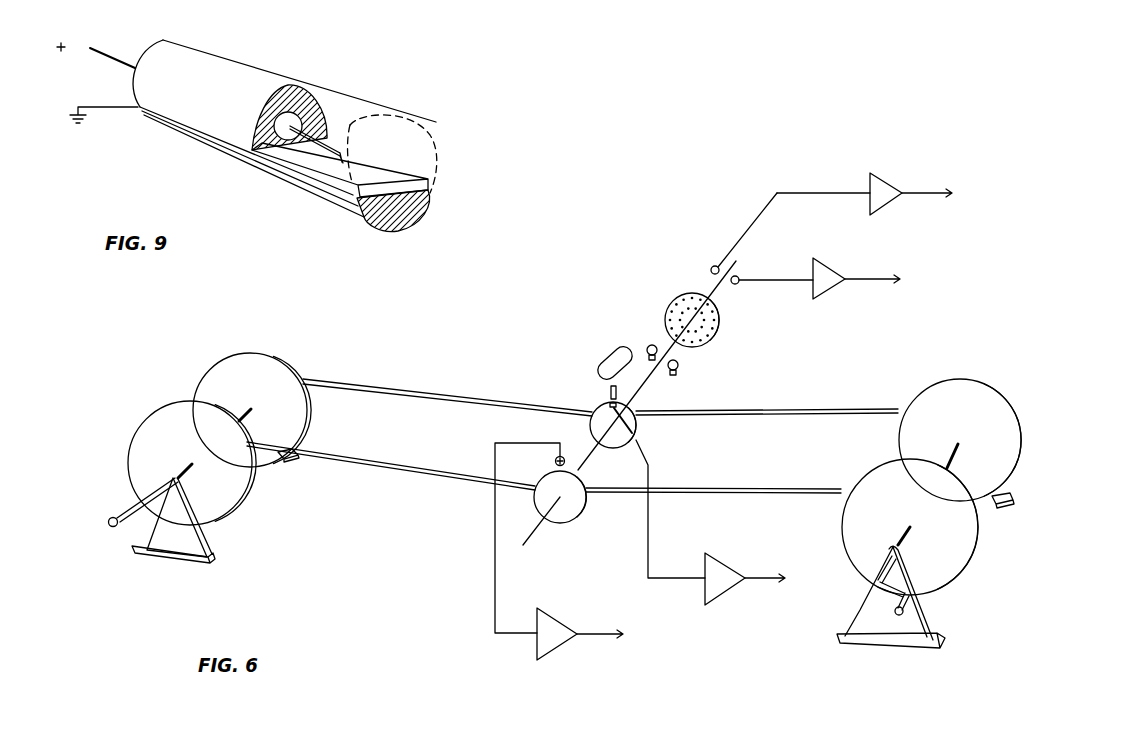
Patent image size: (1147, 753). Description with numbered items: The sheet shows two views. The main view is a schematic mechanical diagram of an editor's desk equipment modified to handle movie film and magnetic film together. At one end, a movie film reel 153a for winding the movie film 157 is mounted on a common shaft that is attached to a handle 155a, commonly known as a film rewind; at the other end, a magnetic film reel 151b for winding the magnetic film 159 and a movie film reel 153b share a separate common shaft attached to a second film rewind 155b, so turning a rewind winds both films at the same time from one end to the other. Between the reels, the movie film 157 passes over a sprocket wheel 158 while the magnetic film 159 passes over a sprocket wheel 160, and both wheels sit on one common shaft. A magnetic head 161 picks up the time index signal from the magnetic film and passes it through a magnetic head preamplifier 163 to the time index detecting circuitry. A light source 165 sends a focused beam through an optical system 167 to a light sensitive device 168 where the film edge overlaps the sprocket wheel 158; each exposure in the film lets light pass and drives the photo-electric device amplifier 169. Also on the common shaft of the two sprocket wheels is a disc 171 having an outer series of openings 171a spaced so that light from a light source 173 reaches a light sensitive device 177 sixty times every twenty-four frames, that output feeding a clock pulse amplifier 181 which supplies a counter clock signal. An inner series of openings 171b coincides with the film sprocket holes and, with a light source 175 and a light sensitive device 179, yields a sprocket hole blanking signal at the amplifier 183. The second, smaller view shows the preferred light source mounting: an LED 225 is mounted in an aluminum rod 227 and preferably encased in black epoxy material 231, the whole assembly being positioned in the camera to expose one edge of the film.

In FIG. 9, the aluminum rod 227 is at (227, 70).
In FIG. 9, the black epoxy material 231 is at (366, 107).
In FIG. 9, the LED 225 is at (403, 175).
In FIG. 6, the movie film reel 153a is at (225, 372).
In FIG. 6, the handle (film rewind) 155a is at (143, 438).
In FIG. 6, the movie film 157 is at (415, 392).
In FIG. 6, the magnetic film 159 is at (407, 449).
In FIG. 6, the sprocket wheel 158 is at (638, 425).
In FIG. 6, the sprocket wheel 160 is at (573, 512).
In FIG. 6, the magnetic head 161 is at (562, 458).
In FIG. 6, the magnetic head preamplifier 163 is at (540, 653).
In FIG. 6, the light source 165 is at (607, 357).
In FIG. 6, the optical system 167 is at (610, 390).
In FIG. 6, the light sensitive device 168 is at (608, 403).
In FIG. 6, the photo-electric device amplifier 169 is at (730, 572).
In FIG. 6, the disc 171 is at (682, 293).
In FIG. 6, the outer series of openings 171a is at (717, 325).
In FIG. 6, the inner series of openings 171b is at (698, 332).
In FIG. 6, the light source 173 is at (647, 345).
In FIG. 6, the light source 175 is at (678, 368).
In FIG. 6, the light sensitive device 177 is at (713, 268).
In FIG. 6, the light sensitive device 179 is at (737, 284).
In FIG. 6, the clock pulse amplifier 181 is at (897, 190).
In FIG. 6, the amplifier 183 is at (825, 290).
In FIG. 6, the movie film reel 153b is at (1002, 415).
In FIG. 6, the magnetic film reel 151b is at (962, 540).
In FIG. 6, the film rewind 155b is at (902, 610).